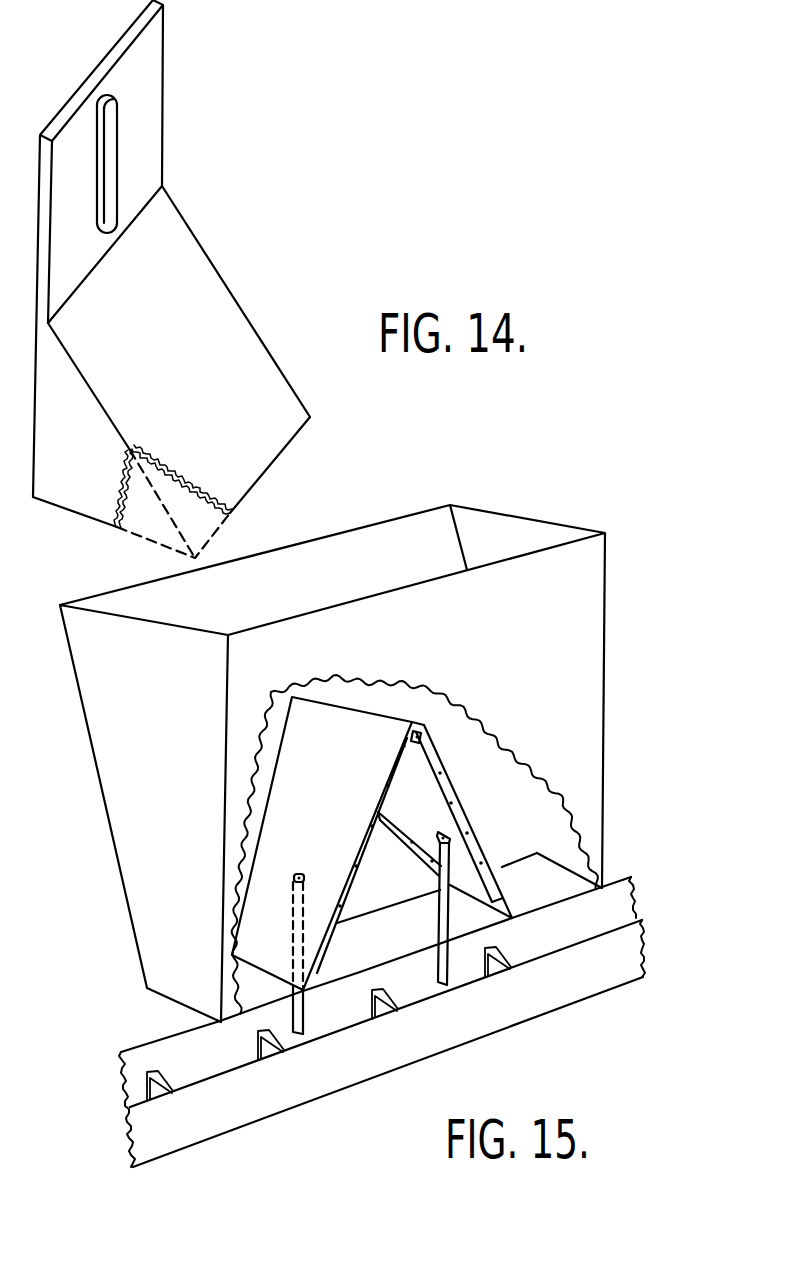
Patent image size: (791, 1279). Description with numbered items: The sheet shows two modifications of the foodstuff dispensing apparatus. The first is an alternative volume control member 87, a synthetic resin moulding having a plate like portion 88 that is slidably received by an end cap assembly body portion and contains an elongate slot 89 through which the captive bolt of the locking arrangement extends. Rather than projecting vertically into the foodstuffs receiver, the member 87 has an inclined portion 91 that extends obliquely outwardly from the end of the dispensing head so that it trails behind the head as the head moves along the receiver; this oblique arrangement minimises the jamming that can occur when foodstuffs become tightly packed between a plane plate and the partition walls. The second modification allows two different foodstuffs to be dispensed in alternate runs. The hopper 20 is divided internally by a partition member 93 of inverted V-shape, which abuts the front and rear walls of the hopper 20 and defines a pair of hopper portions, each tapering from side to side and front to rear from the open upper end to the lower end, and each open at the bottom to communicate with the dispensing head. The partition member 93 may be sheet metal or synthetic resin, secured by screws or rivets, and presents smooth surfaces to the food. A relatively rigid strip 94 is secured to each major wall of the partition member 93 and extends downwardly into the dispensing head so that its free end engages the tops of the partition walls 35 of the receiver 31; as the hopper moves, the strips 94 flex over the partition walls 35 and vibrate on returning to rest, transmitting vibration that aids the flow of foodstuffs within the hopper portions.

In FIG. 15, the hopper 20 is at (582, 637).
In FIG. 15, the receiver 31 is at (602, 980).
In FIG. 15, the partition walls 35 is at (147, 1088).
In FIG. 14, the volume control member 87 is at (170, 156).
In FIG. 14, the plate like portion 88 is at (145, 87).
In FIG. 14, the elongate slot 89 is at (107, 97).
In FIG. 14, the inclined portion 91 is at (190, 297).
In FIG. 15, the partition member 93 is at (328, 758).
In FIG. 15, the strip 94 is at (438, 893).